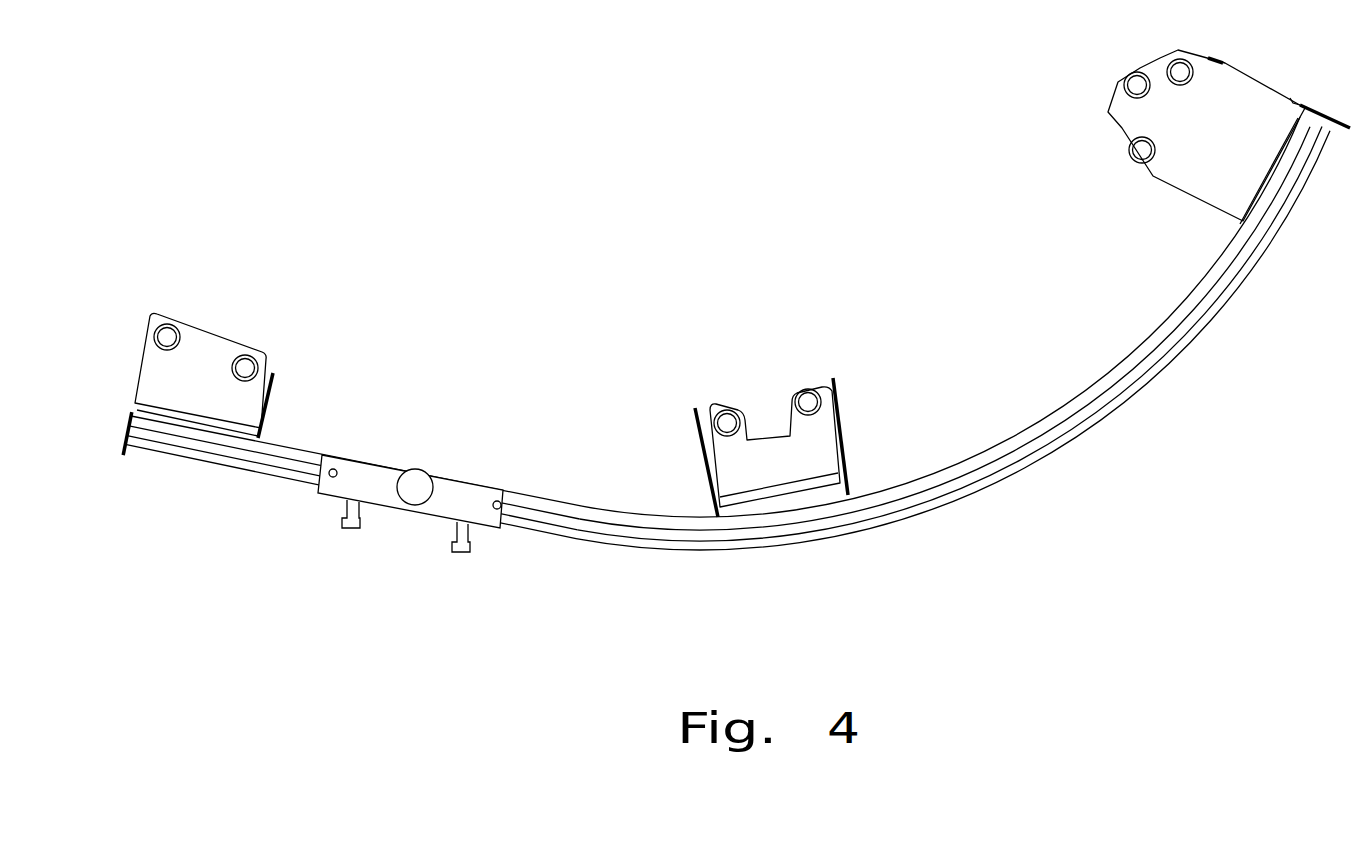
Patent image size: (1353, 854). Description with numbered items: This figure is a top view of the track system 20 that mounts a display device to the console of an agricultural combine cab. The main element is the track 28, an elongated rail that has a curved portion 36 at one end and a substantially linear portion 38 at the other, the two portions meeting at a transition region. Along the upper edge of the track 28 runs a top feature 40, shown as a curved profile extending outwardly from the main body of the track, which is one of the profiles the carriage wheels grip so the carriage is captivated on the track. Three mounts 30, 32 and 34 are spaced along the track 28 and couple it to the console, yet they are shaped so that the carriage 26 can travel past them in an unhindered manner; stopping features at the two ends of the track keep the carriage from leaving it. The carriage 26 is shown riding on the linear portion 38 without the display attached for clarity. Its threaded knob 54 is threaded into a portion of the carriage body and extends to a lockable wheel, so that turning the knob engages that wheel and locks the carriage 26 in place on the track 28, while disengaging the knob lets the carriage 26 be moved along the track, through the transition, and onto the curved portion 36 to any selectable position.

The track system 20 is at (736, 349).
The carriage 26 is at (410, 502).
The track 28 is at (736, 373).
The mount 30 is at (1183, 190).
The mount 32 is at (840, 402).
The mount 34 is at (278, 396).
The curved portion 36 is at (963, 335).
The substantially linear portion 38 is at (533, 548).
The top feature 40 is at (948, 481).
The threaded knob 54 is at (418, 474).